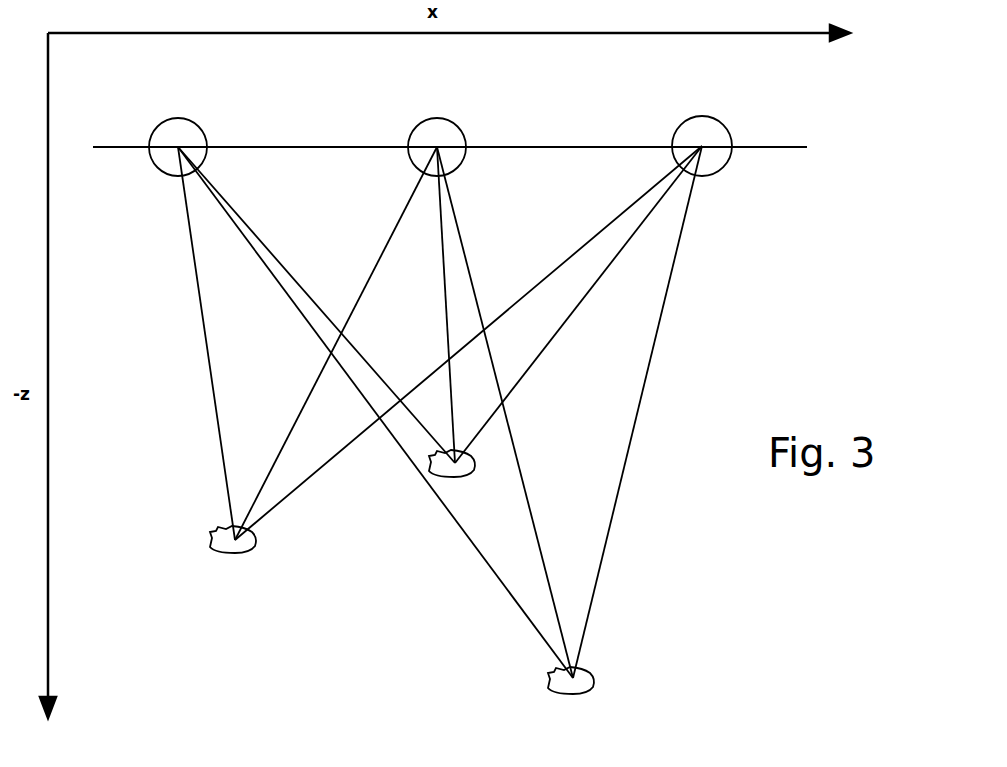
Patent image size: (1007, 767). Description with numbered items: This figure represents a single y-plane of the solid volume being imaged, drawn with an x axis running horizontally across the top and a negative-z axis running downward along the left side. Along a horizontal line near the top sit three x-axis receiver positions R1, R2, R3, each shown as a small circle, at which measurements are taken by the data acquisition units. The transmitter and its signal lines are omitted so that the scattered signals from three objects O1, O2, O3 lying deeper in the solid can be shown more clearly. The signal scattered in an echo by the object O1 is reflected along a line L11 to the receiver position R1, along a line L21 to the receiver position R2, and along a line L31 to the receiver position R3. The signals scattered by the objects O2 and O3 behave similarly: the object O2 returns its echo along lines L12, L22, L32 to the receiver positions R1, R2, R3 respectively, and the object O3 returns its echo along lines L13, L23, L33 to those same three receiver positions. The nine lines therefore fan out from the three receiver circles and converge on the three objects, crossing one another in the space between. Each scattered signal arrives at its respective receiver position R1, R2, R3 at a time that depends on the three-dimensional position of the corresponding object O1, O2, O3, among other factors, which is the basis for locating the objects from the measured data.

The receiver position R1 is at (164, 95).
The receiver position R2 is at (423, 95).
The receiver position R3 is at (677, 116).
The object O1 is at (215, 555).
The object O2 is at (452, 477).
The object O3 is at (595, 673).
The line L11 is at (199, 300).
The line L12 is at (270, 252).
The line L13 is at (273, 277).
The line L21 is at (383, 250).
The line L22 is at (446, 318).
The line L23 is at (473, 287).
The line L31 is at (580, 248).
The line L32 is at (579, 305).
The line L33 is at (659, 325).